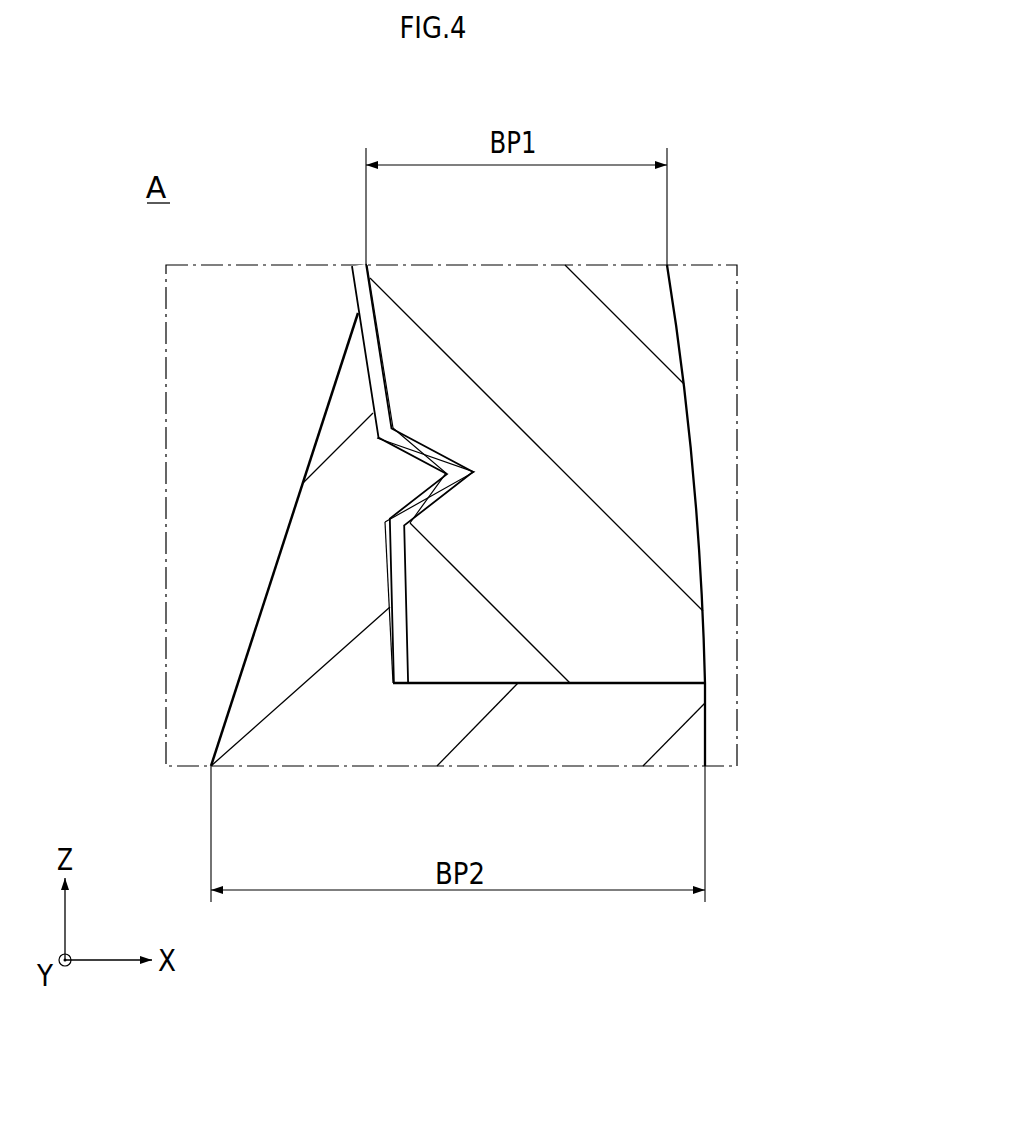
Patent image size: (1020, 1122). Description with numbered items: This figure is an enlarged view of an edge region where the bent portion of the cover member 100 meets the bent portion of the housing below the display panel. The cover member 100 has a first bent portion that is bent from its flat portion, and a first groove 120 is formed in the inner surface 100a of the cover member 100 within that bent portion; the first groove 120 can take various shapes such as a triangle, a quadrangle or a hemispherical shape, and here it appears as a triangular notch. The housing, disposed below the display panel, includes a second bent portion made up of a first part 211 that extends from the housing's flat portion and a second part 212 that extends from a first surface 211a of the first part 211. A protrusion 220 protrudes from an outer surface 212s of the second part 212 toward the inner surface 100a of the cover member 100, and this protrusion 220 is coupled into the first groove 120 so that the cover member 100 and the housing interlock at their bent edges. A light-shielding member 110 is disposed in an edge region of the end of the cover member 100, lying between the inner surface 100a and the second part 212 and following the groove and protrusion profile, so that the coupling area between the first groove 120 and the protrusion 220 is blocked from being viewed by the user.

The cover member 100 is at (650, 476).
The inner surface of the cover member 100a is at (372, 300).
The light-shielding member 110 is at (378, 368).
The first groove 120 is at (476, 473).
The first part 211 is at (415, 740).
The first surface of the first part 211a is at (595, 683).
The second part 212 is at (342, 617).
The outer surface of the second part 212s is at (385, 542).
The protrusion 220 is at (402, 473).